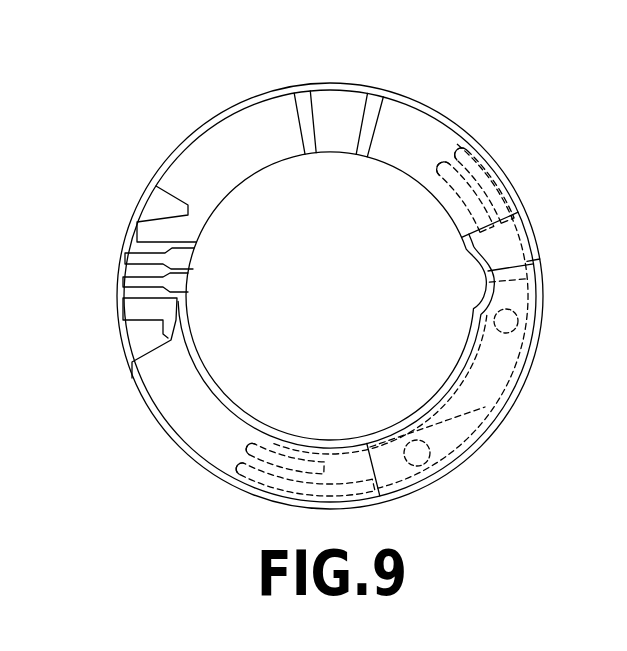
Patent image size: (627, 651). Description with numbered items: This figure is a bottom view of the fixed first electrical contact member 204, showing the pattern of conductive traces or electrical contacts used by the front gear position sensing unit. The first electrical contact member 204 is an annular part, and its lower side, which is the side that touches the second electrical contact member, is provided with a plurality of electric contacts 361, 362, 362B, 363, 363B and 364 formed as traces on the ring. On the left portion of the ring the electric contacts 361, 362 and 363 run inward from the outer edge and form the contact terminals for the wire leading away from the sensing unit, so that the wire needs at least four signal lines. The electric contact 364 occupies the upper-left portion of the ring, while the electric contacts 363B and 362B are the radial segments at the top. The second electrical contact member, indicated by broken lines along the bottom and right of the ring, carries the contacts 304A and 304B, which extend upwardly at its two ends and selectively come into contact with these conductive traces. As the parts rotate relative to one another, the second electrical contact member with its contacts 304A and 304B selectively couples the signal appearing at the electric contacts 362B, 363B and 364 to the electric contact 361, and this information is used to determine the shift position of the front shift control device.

The first electrical contact member 204 is at (212, 99).
The electric contact 361 is at (122, 306).
The electric contact 362 is at (122, 280).
The electric contact 363 is at (126, 258).
The electric contact 364 is at (188, 160).
The electric contact 363B is at (338, 100).
The electric contact 362B is at (420, 126).
The contact 304A is at (282, 445).
The contact 304B is at (492, 165).